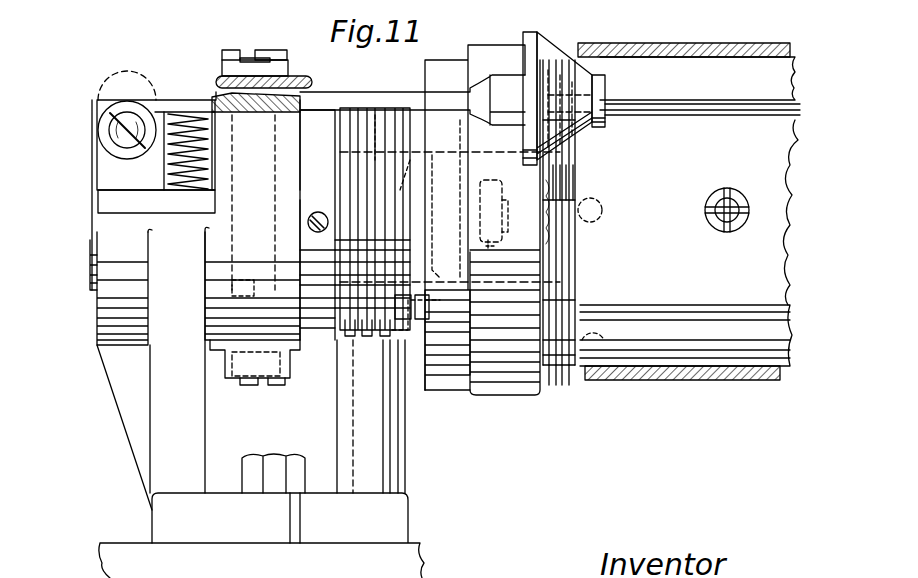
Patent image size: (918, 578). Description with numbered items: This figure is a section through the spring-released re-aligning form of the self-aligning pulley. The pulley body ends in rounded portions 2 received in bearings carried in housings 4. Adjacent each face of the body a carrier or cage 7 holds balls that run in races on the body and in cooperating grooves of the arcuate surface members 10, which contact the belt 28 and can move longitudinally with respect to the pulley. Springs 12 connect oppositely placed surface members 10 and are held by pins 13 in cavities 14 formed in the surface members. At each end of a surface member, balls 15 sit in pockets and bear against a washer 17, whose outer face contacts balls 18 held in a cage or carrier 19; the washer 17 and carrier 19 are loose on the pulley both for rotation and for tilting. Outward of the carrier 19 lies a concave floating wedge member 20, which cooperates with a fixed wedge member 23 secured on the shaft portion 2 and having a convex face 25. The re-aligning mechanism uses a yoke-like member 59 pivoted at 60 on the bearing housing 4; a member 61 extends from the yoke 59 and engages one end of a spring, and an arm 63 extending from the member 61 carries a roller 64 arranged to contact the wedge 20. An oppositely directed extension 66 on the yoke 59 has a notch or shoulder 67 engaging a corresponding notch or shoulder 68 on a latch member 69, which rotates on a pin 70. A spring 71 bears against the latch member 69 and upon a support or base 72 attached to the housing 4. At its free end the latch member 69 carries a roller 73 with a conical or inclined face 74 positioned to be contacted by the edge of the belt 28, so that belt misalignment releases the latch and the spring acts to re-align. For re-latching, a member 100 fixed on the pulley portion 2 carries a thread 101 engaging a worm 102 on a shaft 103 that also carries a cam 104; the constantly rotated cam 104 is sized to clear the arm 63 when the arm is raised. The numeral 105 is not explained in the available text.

The rounded portion 2 is at (90, 243).
The bearing housing 4 is at (110, 302).
The carrier or cage 7 is at (790, 112).
The surface member 10 is at (738, 65).
The spring 12 is at (742, 198).
The pin 13 is at (745, 214).
The perforation or cavity 14 is at (755, 196).
The ball 15 is at (598, 50).
The washer 17 is at (565, 388).
The ball 18 is at (550, 268).
The cage or carrier 19 is at (552, 385).
The concave floating wedge member 20 is at (512, 398).
The fixed wedge member 23 is at (456, 392).
The convex face 25 is at (452, 385).
The belt 28 is at (695, 43).
The yoke-like member 59 is at (289, 180).
The pivot 60 is at (270, 388).
The member 61 is at (248, 282).
The arm 63 is at (314, 342).
The roller 64 is at (494, 204).
The oppositely directed extension 66 is at (294, 76).
The notch or shoulder 67 is at (250, 130).
The notch or shoulder 68 is at (250, 115).
The latch member 69 is at (322, 108).
The bearing or pin 70 is at (127, 102).
The spring 71 is at (172, 163).
The support or base 72 is at (128, 200).
The roller 73 is at (530, 32).
The conical or inclined face 74 is at (552, 44).
The member 100 is at (340, 124).
The thread 101 is at (386, 125).
The worm 102 is at (411, 161).
The shaft 103 is at (353, 382).
The cam 104 is at (414, 322).
The lever 105 is at (134, 6).